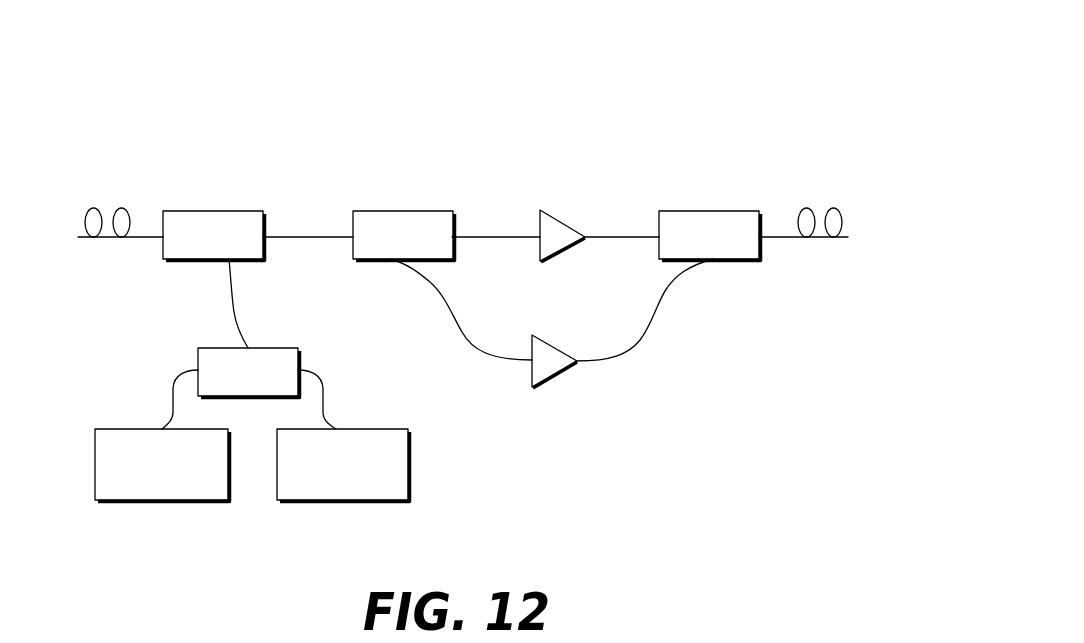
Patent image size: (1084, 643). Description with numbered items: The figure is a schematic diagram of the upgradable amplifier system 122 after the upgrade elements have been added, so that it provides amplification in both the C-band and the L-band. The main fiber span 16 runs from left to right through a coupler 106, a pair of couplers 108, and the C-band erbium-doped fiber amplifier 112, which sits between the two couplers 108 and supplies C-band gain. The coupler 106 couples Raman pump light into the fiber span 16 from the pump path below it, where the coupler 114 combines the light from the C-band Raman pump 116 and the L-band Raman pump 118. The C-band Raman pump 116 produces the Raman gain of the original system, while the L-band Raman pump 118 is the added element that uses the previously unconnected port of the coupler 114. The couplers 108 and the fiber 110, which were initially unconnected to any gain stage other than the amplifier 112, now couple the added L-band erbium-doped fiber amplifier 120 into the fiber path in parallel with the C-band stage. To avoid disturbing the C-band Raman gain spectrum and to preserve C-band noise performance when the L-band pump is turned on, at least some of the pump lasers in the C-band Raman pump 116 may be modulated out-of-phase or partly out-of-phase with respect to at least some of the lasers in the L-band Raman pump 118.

The fiber span 16 is at (108, 198).
The coupler 106 is at (227, 211).
The couplers 108 is at (415, 211).
The fiber 110 is at (463, 328).
The erbium-doped fiber amplifier 112 is at (559, 222).
The coupler 114 is at (273, 348).
The C-band Raman pump 116 is at (113, 429).
The L-band Raman pump 118 is at (385, 429).
The L-band erbium-doped fiber amplifier 120 is at (560, 372).
The system 122 is at (697, 84).